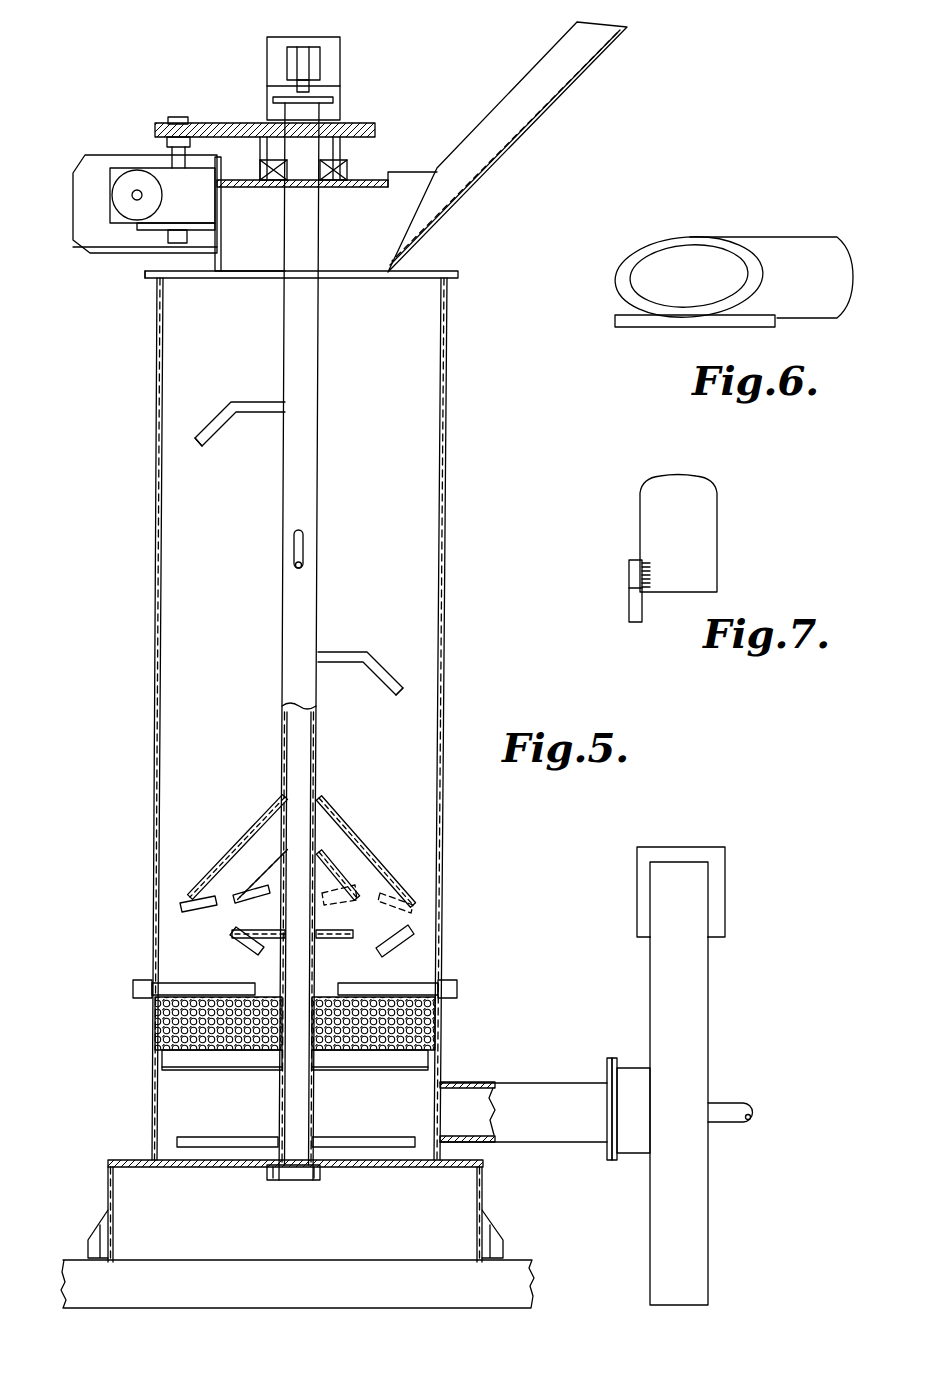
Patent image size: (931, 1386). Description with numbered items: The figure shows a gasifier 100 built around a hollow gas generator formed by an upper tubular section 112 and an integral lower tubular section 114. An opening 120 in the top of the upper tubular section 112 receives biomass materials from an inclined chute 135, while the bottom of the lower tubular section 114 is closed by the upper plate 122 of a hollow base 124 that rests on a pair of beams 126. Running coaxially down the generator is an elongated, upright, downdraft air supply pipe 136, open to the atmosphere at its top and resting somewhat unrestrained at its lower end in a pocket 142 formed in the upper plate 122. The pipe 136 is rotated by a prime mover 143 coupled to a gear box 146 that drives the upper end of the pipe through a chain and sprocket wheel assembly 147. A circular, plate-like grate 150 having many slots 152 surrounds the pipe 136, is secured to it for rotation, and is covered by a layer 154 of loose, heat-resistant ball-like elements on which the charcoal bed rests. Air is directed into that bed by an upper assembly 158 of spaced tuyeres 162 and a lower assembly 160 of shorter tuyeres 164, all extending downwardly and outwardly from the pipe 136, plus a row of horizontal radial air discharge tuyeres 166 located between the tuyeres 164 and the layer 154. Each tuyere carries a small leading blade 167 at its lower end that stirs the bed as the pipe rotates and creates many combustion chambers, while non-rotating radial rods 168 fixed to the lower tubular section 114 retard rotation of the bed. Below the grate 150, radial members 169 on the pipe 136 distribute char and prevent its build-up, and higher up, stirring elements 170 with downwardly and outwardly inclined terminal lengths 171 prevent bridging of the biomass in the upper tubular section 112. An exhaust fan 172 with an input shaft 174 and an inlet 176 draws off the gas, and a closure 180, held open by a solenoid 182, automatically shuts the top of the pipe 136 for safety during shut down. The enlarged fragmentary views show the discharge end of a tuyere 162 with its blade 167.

In FIG. 5, the gasifier 100 is at (452, 527).
In FIG. 5, the upper tubular section 112 is at (447, 342).
In FIG. 5, the lower tubular section 114 is at (441, 912).
In FIG. 5, the opening 120 is at (246, 278).
In FIG. 5, the upper plate 122 is at (195, 1168).
In FIG. 5, the hollow base 124 is at (482, 1190).
In FIG. 5, the beams 126 is at (302, 1272).
In FIG. 5, the inclined chute 135 is at (570, 92).
In FIG. 5, the air supply pipe 136 is at (316, 443).
In FIG. 5, the pocket 142 is at (288, 1182).
In FIG. 5, the prime mover 143 is at (137, 186).
In FIG. 5, the gear box 146 is at (200, 206).
In FIG. 5, the chain and sprocket wheel assembly 147 is at (233, 88).
In FIG. 5, the grate 150 is at (168, 1067).
In FIG. 5, the slots 152 is at (217, 1056).
In FIG. 5, the layer 154 is at (437, 1021).
In FIG. 5, the upper assembly 158 is at (372, 808).
In FIG. 5, the lower assembly 160 is at (348, 862).
In FIG. 5, the tuyeres 162 is at (252, 832).
In FIG. 6, the tuyeres 162 is at (800, 243).
In FIG. 7, the tuyeres 162 is at (708, 522).
In FIG. 5, the tuyeres 164 is at (323, 885).
In FIG. 5, the air discharge tuyeres 166 is at (364, 940).
In FIG. 5, the leading blade 167 is at (232, 940).
In FIG. 6, the leading blade 167 is at (632, 330).
In FIG. 7, the leading blade 167 is at (628, 609).
In FIG. 5, the radial rods 168 is at (378, 987).
In FIG. 5, the radial members 169 is at (362, 1140).
In FIG. 5, the stirring elements 170 is at (247, 404).
In FIG. 5, the terminal length 171 is at (211, 437).
In FIG. 5, the exhaust fan 172 is at (700, 962).
In FIG. 5, the input shaft 174 is at (735, 1125).
In FIG. 5, the inlet 176 is at (535, 1093).
In FIG. 5, the closure 180 is at (333, 102).
In FIG. 5, the solenoid 182 is at (313, 55).